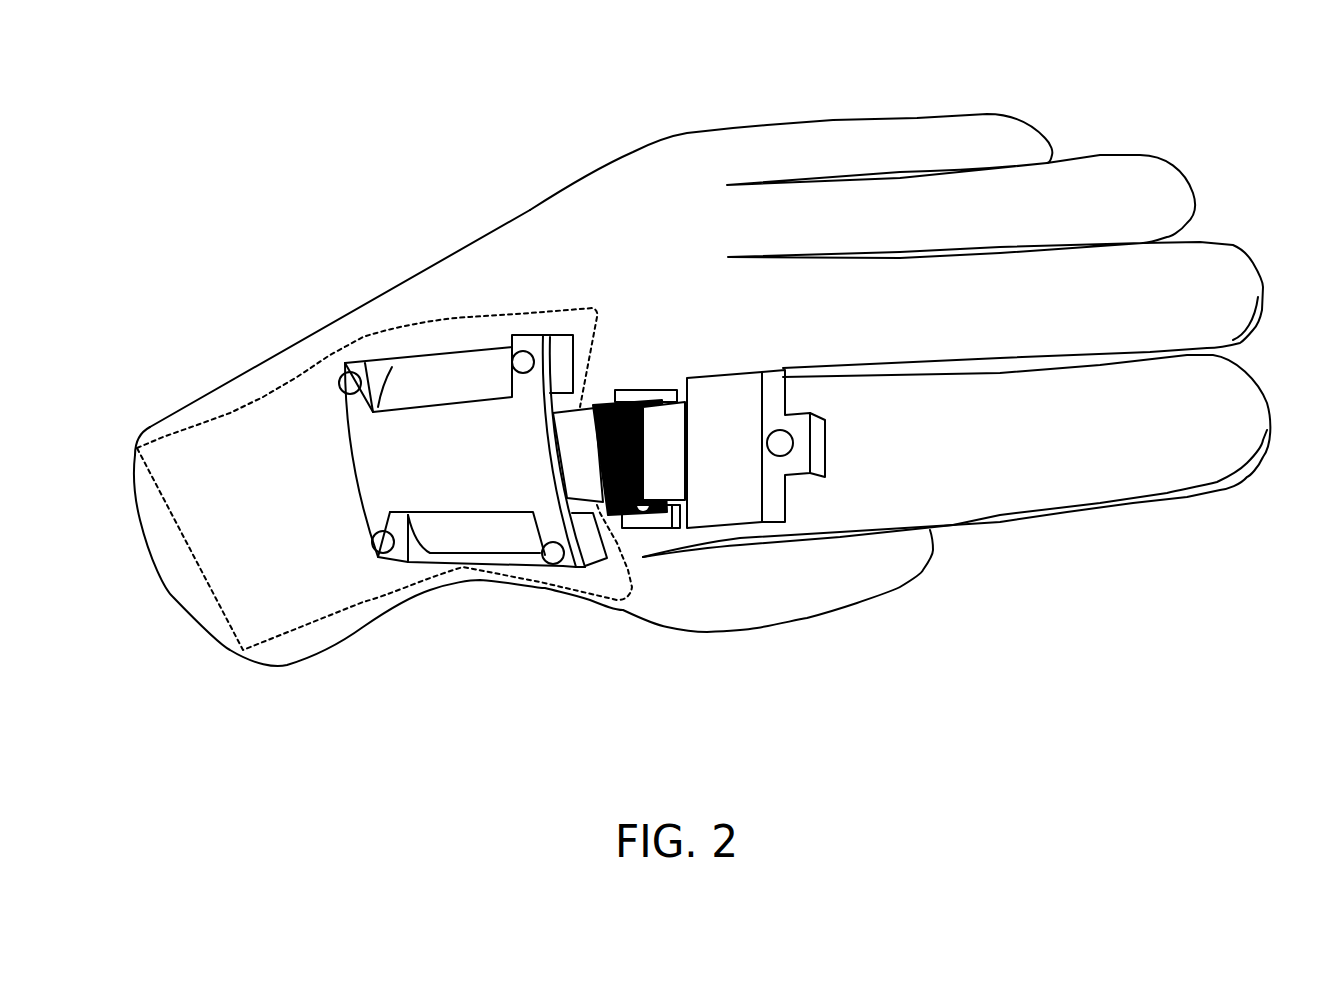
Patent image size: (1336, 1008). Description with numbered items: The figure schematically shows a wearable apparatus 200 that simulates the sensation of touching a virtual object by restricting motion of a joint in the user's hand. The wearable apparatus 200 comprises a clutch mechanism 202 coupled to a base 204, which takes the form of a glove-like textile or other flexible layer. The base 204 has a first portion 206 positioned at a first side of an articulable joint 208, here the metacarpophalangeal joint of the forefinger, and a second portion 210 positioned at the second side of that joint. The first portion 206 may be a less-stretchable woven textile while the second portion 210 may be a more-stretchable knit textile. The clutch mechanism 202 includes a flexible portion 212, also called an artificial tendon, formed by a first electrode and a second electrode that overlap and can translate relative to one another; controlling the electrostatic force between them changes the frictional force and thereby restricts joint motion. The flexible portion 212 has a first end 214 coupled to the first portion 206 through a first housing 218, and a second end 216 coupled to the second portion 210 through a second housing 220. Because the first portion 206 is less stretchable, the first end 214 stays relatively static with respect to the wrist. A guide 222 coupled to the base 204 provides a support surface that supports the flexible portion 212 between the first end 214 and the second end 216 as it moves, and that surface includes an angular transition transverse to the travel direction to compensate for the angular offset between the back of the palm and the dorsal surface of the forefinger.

The wearable apparatus 200 is at (458, 104).
The clutch mechanism 202 is at (706, 318).
The base 204 is at (635, 152).
The first portion 206 is at (470, 317).
The articulable joint 208 is at (650, 583).
The second portion 210 is at (648, 238).
The flexible portion 212 is at (668, 440).
The first end 214 is at (553, 458).
The second end 216 is at (690, 469).
The first housing 218 is at (461, 468).
The second housing 220 is at (746, 452).
The guide 222 is at (603, 402).